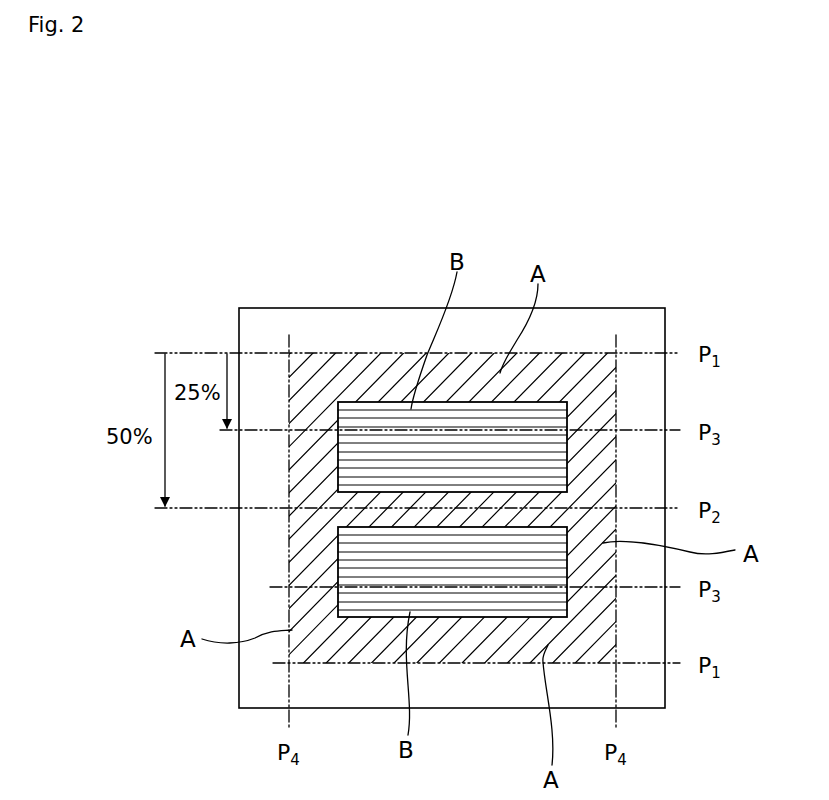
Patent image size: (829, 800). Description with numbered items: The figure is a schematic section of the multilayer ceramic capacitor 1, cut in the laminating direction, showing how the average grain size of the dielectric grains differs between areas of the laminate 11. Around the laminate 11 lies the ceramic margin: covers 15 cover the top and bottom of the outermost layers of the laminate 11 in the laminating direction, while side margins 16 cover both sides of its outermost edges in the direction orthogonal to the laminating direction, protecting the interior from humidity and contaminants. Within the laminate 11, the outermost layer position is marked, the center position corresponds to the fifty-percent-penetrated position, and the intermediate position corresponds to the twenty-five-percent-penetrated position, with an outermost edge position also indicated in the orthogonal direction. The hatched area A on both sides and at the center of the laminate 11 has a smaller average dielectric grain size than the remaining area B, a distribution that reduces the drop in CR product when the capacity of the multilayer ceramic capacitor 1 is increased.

The multilayer ceramic capacitor 1 is at (514, 231).
The laminate 11 is at (386, 353).
The covers 15 is at (594, 330).
The side margins 16 is at (254, 571).